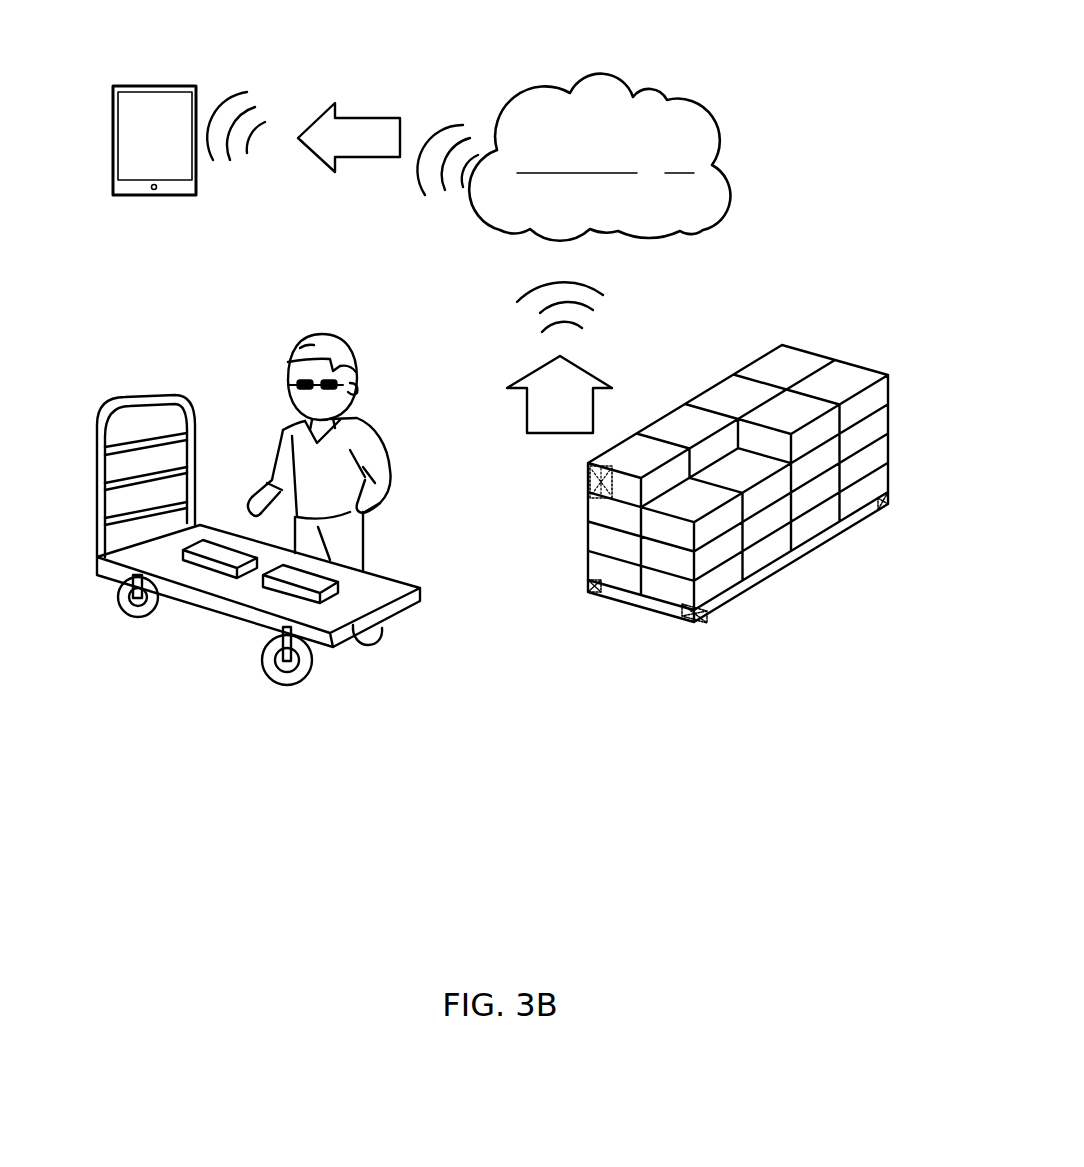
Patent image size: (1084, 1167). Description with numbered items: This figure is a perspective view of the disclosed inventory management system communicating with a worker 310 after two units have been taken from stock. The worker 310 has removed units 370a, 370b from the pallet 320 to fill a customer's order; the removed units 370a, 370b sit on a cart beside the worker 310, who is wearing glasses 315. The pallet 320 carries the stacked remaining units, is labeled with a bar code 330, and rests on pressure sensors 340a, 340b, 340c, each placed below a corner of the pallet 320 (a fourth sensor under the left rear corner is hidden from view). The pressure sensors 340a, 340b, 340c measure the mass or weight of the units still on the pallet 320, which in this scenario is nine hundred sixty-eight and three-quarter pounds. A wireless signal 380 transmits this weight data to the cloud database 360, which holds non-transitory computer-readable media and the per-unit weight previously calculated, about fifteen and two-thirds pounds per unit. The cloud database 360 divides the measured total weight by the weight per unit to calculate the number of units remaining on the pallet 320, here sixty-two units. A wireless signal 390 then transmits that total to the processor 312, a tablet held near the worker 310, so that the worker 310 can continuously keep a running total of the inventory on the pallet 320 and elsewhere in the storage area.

The worker 310 is at (313, 346).
The processor 312 is at (113, 190).
The wearable smart glasses 315 is at (290, 385).
The pallet 320 is at (763, 490).
The bar code 330 is at (413, 606).
The pressure sensor 340a is at (597, 594).
The pressure sensor 340b is at (692, 618).
The pressure sensor 340c is at (889, 505).
The cloud database 360 is at (667, 97).
The unit 370a is at (208, 563).
The unit 370b is at (325, 600).
The wireless signal 380 is at (550, 288).
The wireless signal 390 is at (463, 125).